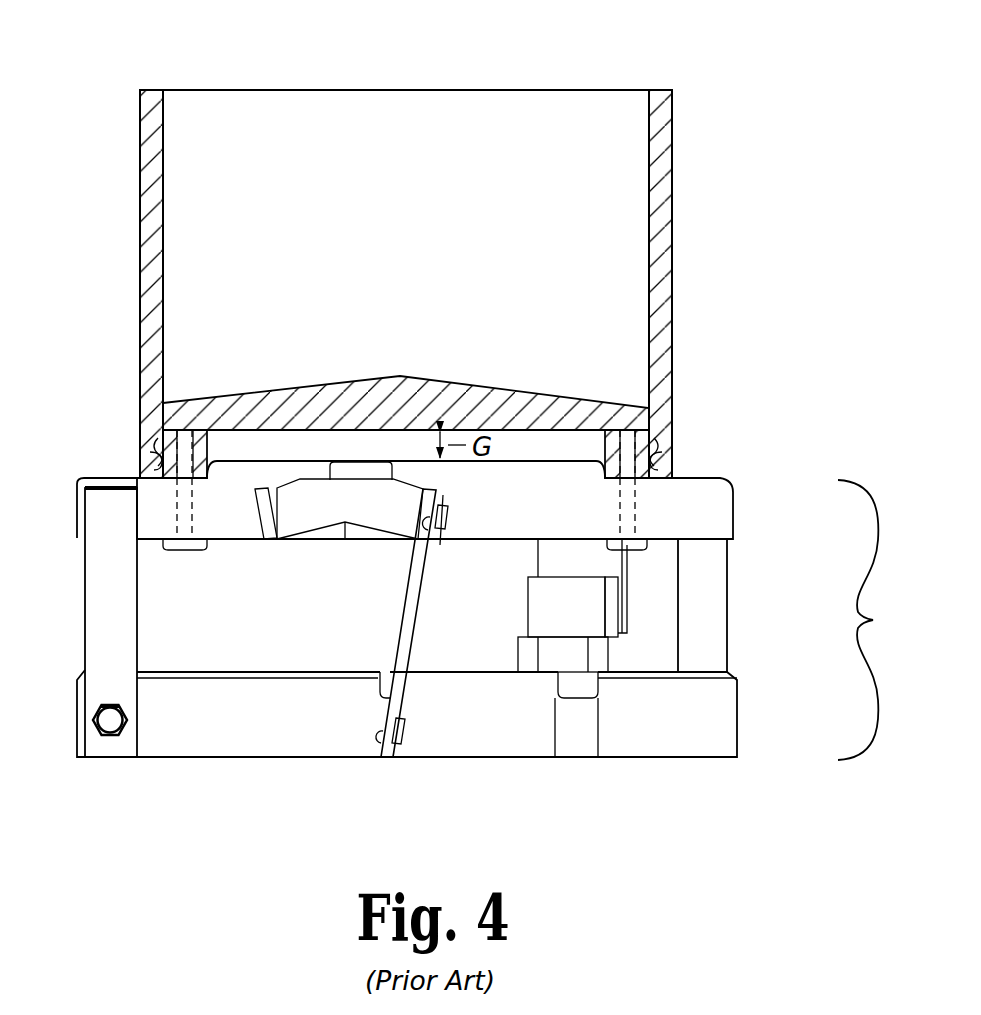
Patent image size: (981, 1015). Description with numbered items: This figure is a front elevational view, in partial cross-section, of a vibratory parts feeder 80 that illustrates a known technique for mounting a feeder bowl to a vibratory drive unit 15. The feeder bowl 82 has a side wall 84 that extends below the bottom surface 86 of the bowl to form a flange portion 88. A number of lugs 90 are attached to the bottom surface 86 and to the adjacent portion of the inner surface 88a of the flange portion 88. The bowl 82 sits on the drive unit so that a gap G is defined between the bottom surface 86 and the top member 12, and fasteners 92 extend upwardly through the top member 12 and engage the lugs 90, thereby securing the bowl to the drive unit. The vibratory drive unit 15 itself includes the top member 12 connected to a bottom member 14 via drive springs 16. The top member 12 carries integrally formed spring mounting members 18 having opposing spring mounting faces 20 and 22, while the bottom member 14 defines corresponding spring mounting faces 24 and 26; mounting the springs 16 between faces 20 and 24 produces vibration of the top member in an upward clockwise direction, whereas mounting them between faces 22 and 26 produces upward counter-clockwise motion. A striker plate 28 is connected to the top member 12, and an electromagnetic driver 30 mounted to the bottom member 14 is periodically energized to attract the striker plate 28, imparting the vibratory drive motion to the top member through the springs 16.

The feeder bowl 82 is at (408, 261).
The vibratory parts feeder 80 is at (752, 239).
The side wall 84 is at (140, 195).
The bottom surface 86 is at (530, 432).
The flange portion 88 is at (158, 440).
The inner surface 88a is at (160, 468).
The lugs 90 is at (207, 450).
The fasteners 92 is at (185, 550).
The top member 12 is at (168, 521).
The vibratory drive unit 15 is at (493, 620).
The drive springs 16 is at (137, 603).
The bottom member 14 is at (737, 718).
The spring mounting face 22 is at (258, 540).
The spring mounting member 18 is at (347, 497).
The spring mounting face 20 is at (412, 537).
The spring mounting face 24 is at (378, 748).
The striker plate 28 is at (532, 565).
The electromagnetic driver 30 is at (525, 620).
The spring mounting face 26 is at (572, 724).